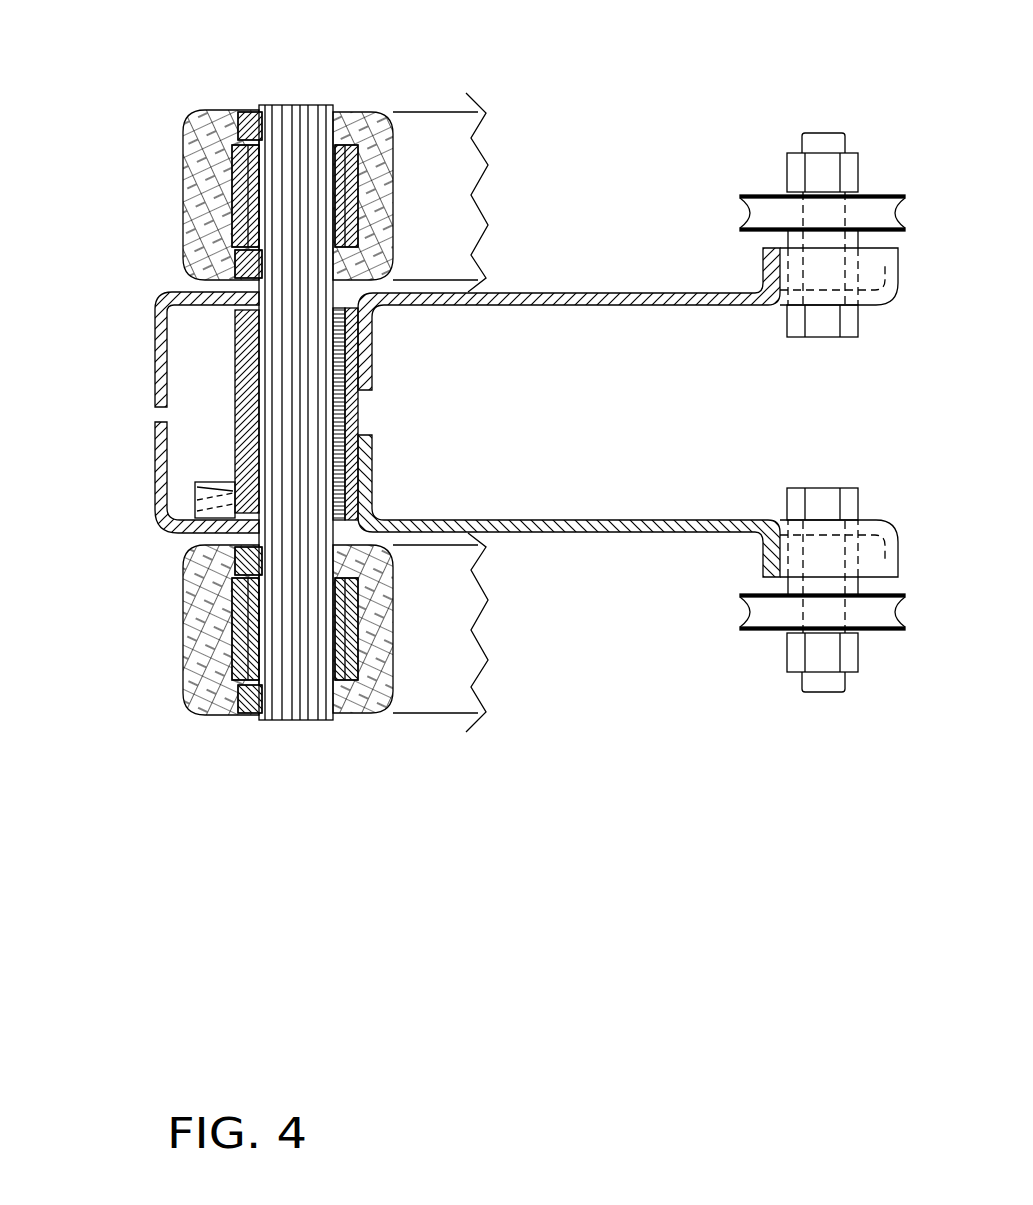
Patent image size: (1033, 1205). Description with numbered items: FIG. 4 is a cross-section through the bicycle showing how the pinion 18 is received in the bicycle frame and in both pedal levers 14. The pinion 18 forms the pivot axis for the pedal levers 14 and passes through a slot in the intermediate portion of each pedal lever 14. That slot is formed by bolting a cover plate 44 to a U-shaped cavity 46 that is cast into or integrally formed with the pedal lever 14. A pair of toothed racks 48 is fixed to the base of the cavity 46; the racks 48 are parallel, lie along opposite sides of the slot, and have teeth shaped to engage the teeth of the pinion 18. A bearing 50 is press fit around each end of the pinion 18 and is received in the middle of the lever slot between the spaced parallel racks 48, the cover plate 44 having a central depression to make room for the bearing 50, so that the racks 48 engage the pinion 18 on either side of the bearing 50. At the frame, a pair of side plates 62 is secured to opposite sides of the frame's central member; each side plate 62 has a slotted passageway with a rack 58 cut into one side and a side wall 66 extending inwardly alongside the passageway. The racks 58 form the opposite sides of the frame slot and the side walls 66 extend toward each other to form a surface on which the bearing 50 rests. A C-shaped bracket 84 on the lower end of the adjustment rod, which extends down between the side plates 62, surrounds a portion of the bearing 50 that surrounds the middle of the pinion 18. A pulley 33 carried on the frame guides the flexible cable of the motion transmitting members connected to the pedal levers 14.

The pedal lever 14 is at (428, 145).
The pinion 18 is at (298, 413).
The pulley 33 is at (777, 207).
The cover plate 44 is at (372, 196).
The U-shaped cavity 46 is at (200, 602).
The toothed rack 48 is at (248, 112).
The bearing 50 is at (255, 172).
The rack 58 is at (258, 290).
The side plate 62 is at (693, 293).
The side wall 66 is at (372, 355).
The C-shaped bracket 84 is at (197, 505).